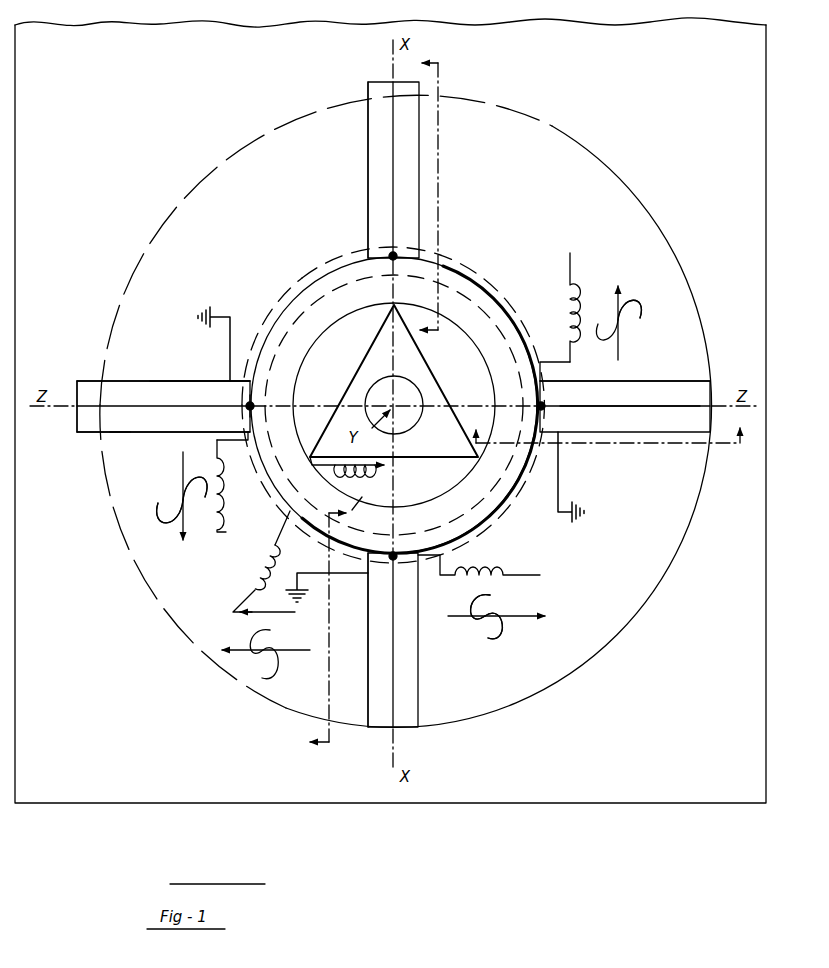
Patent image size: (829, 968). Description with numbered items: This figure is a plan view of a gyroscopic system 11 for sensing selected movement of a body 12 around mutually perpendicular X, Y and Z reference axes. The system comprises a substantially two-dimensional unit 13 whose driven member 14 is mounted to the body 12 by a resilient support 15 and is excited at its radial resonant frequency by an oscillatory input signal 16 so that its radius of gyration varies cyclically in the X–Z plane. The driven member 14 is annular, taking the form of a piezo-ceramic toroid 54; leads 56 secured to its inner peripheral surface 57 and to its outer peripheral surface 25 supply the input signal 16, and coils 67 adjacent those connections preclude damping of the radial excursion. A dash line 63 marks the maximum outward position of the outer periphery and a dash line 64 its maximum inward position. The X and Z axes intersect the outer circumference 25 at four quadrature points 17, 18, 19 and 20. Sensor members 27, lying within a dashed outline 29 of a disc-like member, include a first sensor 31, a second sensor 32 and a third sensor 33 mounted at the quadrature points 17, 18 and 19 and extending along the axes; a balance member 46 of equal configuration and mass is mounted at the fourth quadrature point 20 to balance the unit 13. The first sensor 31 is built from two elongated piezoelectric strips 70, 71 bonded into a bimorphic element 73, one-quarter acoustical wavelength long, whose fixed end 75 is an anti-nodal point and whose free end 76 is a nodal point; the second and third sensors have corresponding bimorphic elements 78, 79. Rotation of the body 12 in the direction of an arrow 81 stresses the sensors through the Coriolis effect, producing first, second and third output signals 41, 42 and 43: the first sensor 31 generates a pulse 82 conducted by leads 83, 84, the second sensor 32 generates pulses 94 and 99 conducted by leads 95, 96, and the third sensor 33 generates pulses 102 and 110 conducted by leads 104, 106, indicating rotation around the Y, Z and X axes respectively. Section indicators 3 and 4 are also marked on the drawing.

The gyroscopic system 11 is at (640, 196).
The body 12 is at (530, 803).
The two-dimensional unit 13 is at (492, 276).
The driven member 14 is at (296, 331).
The resilient support 15 is at (358, 378).
The input signal 16 is at (265, 676).
The first quadrature point 17 is at (244, 402).
The second quadrature point 18 is at (400, 561).
The third quadrature point 19 is at (547, 401).
The fourth quadrature point 20 is at (400, 254).
The outer peripheral surface 25 is at (507, 509).
The sensor members 27 is at (136, 382).
The dashed outline 29 is at (158, 183).
The first sensor 31 is at (110, 433).
The second sensor 32 is at (410, 660).
The third sensor 33 is at (620, 410).
The first output signal 41 is at (157, 515).
The second output signal 42 is at (484, 630).
The third output signal 43 is at (630, 322).
The balance member 46 is at (408, 173).
The toroid 54 is at (369, 499).
The leads 56 is at (283, 530).
The inner peripheral surface 57 is at (458, 488).
The dash line 63 is at (302, 278).
The dash line 64 is at (312, 303).
The coils 67 is at (258, 563).
The elongated strip 70 is at (188, 381).
The elongated strip 71 is at (141, 434).
The bimorphic element 73 is at (92, 403).
The fixed end 75 is at (256, 403).
The free end 76 is at (75, 422).
The bimorphic element 78 is at (390, 672).
The bimorphic element 79 is at (656, 404).
The arrow 81 is at (168, 522).
The pulse 82 is at (190, 483).
The lead 83 is at (231, 489).
The lead 84 is at (231, 312).
The pulse 94 is at (490, 606).
The lead 95 is at (330, 578).
The lead 96 is at (507, 574).
The pulse 99 is at (503, 630).
The pulse 102 is at (599, 324).
The lead 104 is at (573, 356).
The lead 106 is at (562, 487).
The pulse 110 is at (642, 312).
The section line 3- 3 is at (329, 627).
The section line 4- 4 is at (580, 245).